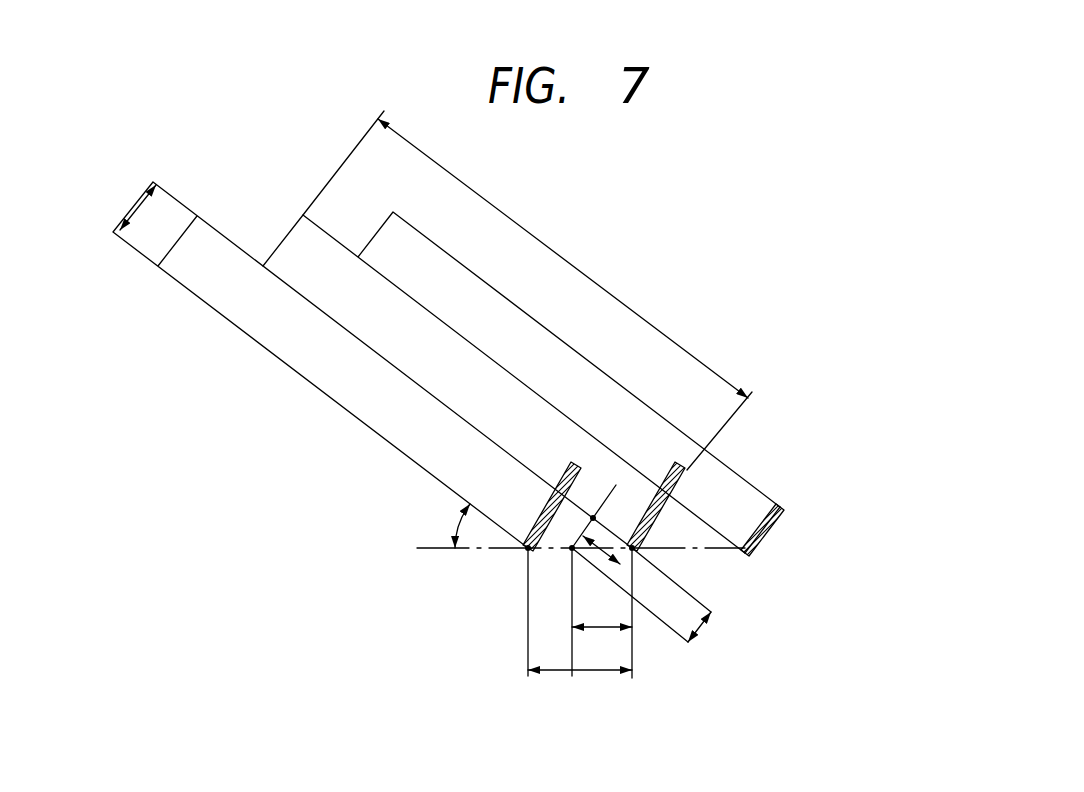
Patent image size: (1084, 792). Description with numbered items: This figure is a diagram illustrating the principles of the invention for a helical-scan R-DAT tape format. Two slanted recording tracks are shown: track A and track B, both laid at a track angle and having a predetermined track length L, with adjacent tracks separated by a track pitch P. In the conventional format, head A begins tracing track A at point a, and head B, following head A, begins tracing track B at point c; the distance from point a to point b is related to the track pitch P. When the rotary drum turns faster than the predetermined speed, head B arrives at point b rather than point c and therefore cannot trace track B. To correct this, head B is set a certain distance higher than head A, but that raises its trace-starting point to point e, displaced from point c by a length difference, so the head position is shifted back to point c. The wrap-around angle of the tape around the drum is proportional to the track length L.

The track A is at (520, 549).
The track B is at (684, 467).
The point a is at (527, 550).
The point b is at (571, 549).
The point c is at (635, 550).
The point e is at (603, 548).
The track pitch P is at (134, 206).
The track length L is at (527, 290).